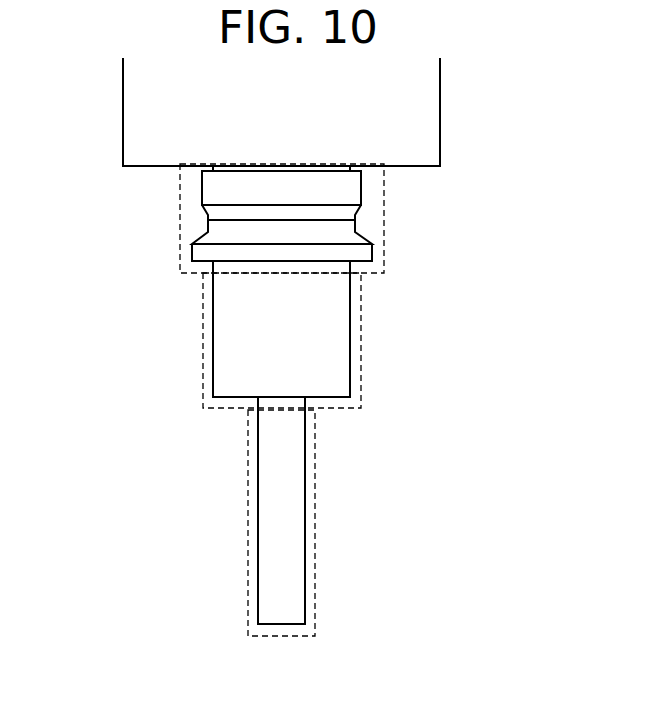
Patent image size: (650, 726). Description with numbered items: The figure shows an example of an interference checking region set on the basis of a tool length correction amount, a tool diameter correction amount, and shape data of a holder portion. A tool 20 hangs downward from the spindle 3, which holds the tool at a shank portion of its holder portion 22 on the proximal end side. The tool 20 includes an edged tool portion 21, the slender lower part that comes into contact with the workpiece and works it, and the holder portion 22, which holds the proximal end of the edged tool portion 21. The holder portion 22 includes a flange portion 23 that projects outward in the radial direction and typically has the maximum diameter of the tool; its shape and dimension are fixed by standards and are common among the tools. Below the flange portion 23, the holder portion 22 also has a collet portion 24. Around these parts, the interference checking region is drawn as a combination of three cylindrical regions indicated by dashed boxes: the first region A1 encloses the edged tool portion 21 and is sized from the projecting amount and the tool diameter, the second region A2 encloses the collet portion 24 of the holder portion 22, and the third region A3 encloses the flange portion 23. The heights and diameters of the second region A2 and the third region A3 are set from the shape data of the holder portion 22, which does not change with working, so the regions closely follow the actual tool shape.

The spindle 3 is at (440, 103).
The tool 20 is at (302, 395).
The edged tool portion 21 is at (305, 509).
The holder portion 22 is at (331, 302).
The flange portion 23 is at (372, 251).
The collet portion 24 is at (350, 345).
The first region A1 is at (315, 580).
The second region A2 is at (361, 310).
The third region A3 is at (384, 197).